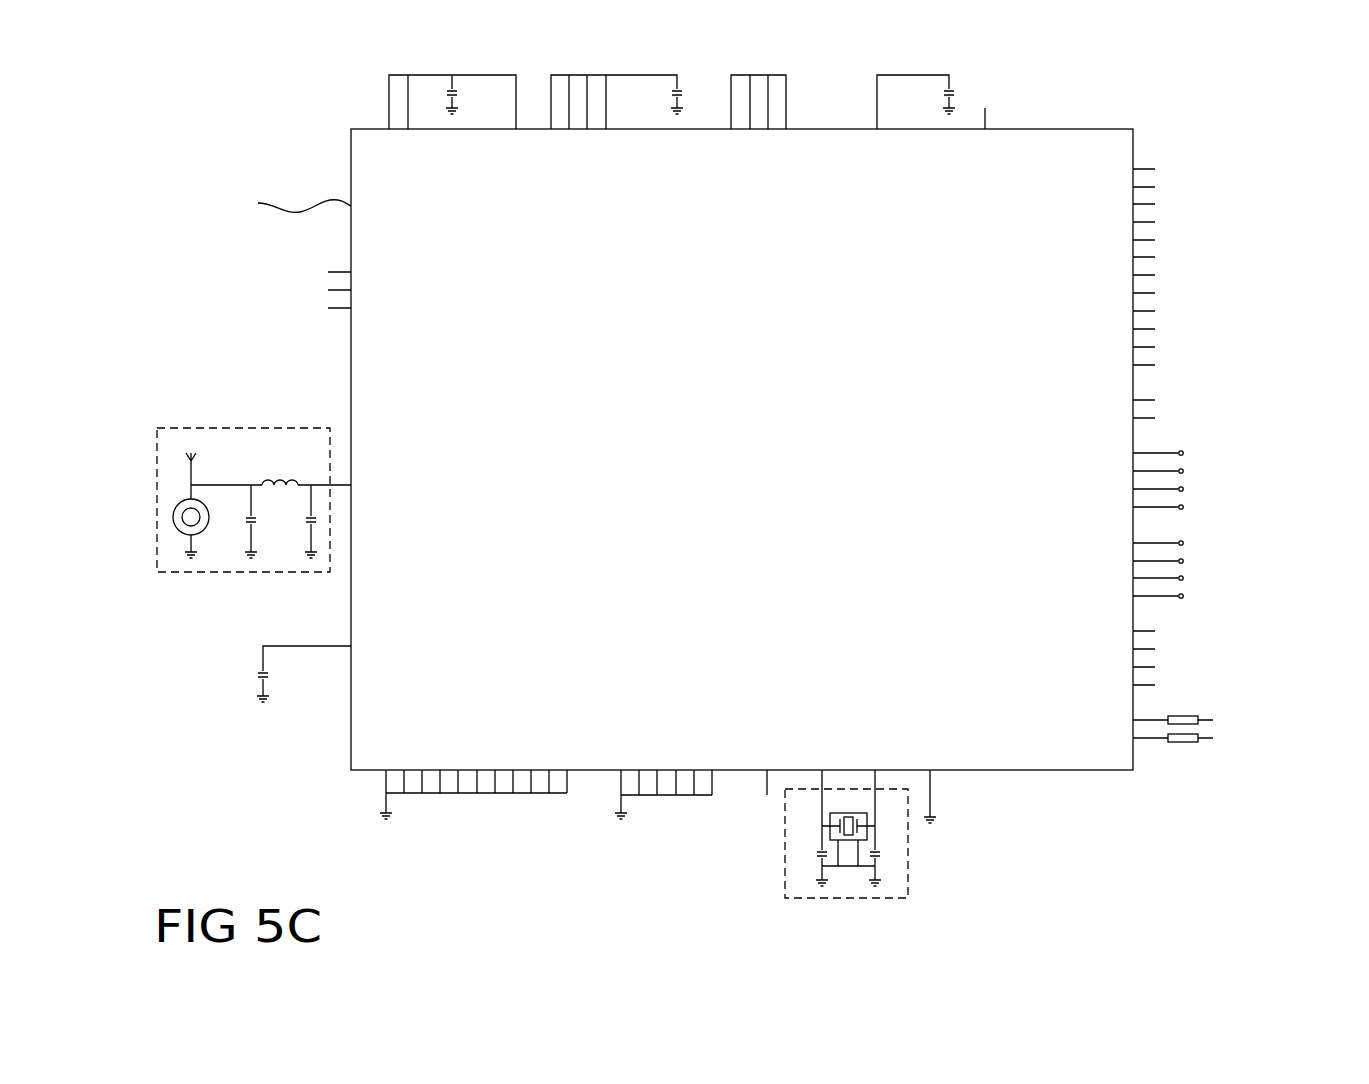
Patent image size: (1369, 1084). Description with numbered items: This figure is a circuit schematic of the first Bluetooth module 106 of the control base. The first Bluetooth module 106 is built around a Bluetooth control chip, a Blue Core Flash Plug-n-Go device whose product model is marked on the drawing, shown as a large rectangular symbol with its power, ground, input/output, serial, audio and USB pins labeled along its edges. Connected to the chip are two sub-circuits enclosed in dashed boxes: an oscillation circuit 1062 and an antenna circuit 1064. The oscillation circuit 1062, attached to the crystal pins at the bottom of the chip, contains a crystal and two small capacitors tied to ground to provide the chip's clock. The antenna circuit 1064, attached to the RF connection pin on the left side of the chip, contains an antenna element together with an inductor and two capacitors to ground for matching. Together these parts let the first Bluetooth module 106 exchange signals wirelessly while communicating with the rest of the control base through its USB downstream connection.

The first Bluetooth module 106 is at (1360, 104).
The antenna circuit 1064 is at (157, 498).
The oscillation circuit 1062 is at (785, 856).